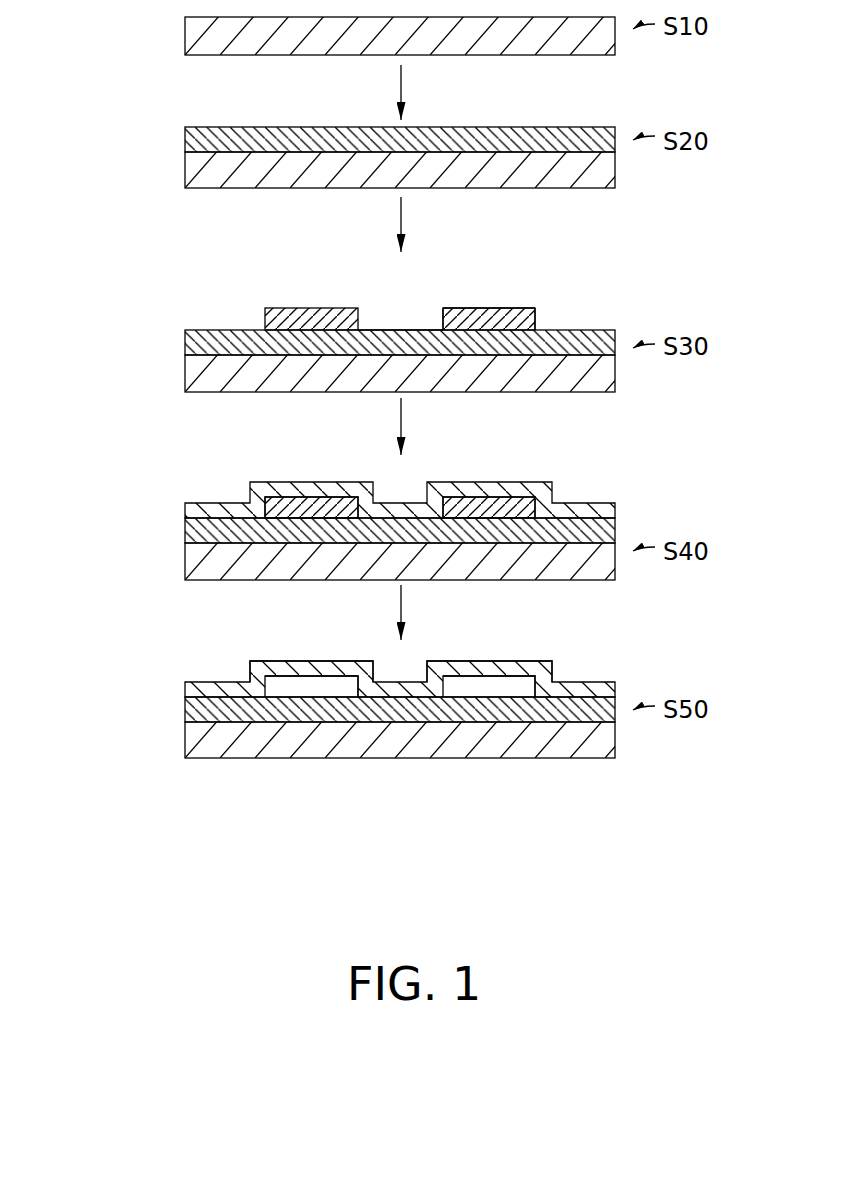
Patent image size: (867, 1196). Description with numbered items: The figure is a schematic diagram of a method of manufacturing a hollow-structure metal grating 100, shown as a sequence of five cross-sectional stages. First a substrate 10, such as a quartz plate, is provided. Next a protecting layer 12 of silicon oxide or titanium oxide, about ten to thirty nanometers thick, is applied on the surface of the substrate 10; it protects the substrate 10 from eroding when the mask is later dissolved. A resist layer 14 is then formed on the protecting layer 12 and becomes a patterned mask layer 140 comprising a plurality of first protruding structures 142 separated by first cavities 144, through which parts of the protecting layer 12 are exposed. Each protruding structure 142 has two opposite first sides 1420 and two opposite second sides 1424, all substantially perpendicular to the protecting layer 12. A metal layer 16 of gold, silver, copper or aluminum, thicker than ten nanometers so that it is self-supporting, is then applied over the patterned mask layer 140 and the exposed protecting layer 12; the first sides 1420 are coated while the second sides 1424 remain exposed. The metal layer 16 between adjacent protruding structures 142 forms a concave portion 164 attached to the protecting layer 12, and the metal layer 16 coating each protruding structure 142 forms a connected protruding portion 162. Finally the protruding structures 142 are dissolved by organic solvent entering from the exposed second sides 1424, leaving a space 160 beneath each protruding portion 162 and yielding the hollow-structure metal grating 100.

The substrate 10 is at (210, 43).
The protecting layer 12 is at (198, 138).
The resist layer 14 is at (423, 326).
The patterned mask layer 140 is at (455, 326).
The first protruding structure 142 is at (315, 306).
The first cavity 144 is at (388, 327).
The first side 1420 is at (443, 310).
The second side 1424 is at (505, 317).
The metal layer 16 is at (265, 474).
The hollow-structure metal grating 100 is at (332, 667).
The space 160 is at (288, 688).
The protruding portion 162 is at (282, 667).
The concave portion 164 is at (400, 690).